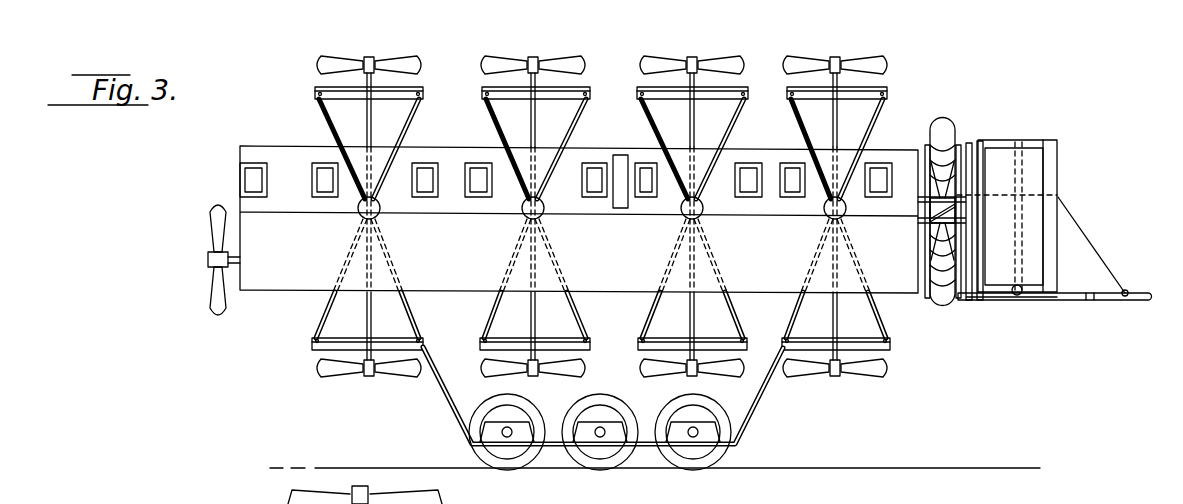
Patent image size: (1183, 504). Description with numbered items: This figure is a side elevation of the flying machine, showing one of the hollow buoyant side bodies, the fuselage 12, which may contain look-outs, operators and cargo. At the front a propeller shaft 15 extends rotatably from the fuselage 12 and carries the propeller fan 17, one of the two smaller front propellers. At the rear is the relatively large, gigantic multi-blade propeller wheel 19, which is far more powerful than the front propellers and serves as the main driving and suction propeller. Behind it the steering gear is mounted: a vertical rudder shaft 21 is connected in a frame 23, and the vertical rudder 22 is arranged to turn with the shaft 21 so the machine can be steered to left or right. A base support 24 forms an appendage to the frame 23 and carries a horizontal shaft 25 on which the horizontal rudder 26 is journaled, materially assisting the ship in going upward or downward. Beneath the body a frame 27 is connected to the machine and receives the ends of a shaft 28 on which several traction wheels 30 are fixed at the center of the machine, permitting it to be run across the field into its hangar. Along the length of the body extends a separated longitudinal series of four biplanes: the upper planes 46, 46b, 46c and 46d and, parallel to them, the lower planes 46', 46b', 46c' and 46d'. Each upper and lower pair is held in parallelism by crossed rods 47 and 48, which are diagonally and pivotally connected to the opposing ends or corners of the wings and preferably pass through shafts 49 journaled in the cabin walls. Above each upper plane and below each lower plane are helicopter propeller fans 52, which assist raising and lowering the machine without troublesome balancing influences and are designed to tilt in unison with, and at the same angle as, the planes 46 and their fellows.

The fuselage 12 is at (461, 283).
The propeller shaft 15 is at (227, 266).
The propeller fan 17 is at (212, 221).
The multi-blade propeller wheel 19 is at (948, 130).
The vertical rudder shaft 21 is at (1015, 178).
The vertical rudder 22 is at (1035, 259).
The frame 23 is at (1038, 142).
The base support 24 is at (1066, 301).
The horizontal shaft 25 is at (1090, 301).
The horizontal rudder 26 is at (1135, 295).
The frame 27 is at (441, 392).
The shaft 28 is at (638, 461).
The traction wheels 30 is at (670, 405).
The upper plane 46 is at (853, 86).
The upper plane 46b is at (710, 108).
The upper plane 46c is at (552, 112).
The upper plane 46d is at (394, 102).
The lower plane 46' is at (860, 354).
The lower plane 46b' is at (671, 325).
The lower plane 46c' is at (511, 352).
The lower plane 46d' is at (334, 345).
The crossed rod 47 is at (805, 136).
The crossed rod 48 is at (868, 132).
The shaft 49 is at (867, 234).
The helicopter propeller fans 52 is at (785, 65).